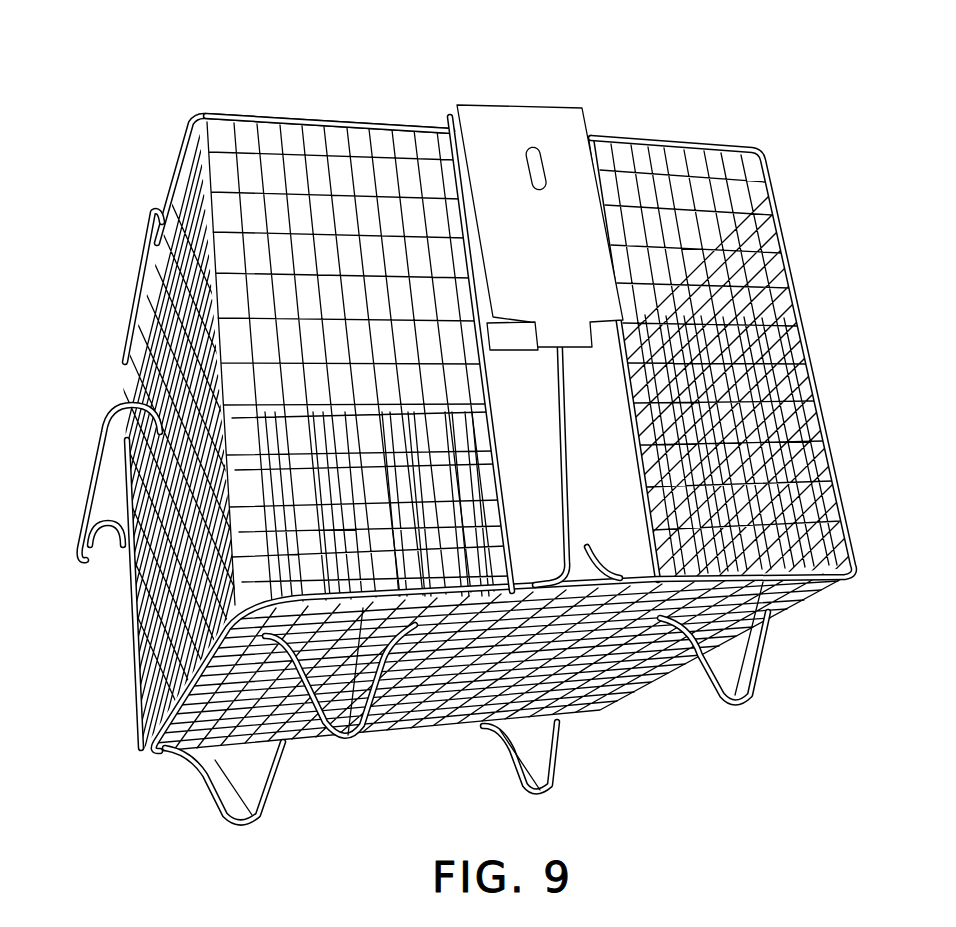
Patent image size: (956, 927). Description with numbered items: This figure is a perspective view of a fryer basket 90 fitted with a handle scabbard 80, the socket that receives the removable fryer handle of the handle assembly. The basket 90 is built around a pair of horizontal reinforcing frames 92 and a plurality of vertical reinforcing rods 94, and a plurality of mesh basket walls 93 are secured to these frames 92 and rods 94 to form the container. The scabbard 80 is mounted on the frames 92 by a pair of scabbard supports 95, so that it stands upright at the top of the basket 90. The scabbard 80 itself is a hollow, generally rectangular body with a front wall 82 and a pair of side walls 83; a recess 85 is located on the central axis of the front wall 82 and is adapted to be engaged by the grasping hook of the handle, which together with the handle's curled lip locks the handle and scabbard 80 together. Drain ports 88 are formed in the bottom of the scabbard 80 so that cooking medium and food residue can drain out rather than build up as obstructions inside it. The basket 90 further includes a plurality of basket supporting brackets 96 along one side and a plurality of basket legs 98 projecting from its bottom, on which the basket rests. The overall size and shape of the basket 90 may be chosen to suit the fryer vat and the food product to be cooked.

The scabbard 80 is at (532, 313).
The front wall 82 is at (562, 249).
The side walls 83 is at (452, 122).
The recess 85 is at (533, 153).
The drain ports 88 is at (607, 330).
The fryer basket 90 is at (190, 98).
The horizontal reinforcing frames 92 is at (183, 173).
The basket walls 93 is at (310, 178).
The vertical reinforcing rods 94 is at (155, 228).
The scabbard supports 95 is at (640, 477).
The basket supporting brackets 96 is at (80, 562).
The basket legs 98 is at (243, 828).